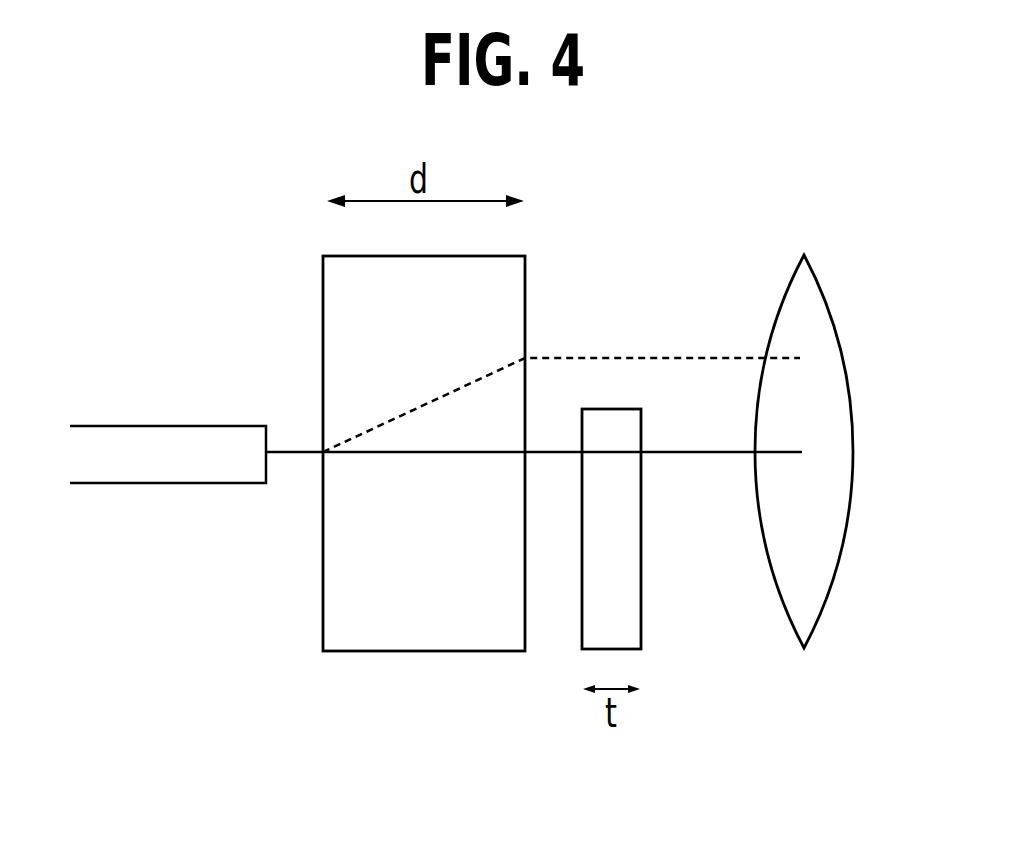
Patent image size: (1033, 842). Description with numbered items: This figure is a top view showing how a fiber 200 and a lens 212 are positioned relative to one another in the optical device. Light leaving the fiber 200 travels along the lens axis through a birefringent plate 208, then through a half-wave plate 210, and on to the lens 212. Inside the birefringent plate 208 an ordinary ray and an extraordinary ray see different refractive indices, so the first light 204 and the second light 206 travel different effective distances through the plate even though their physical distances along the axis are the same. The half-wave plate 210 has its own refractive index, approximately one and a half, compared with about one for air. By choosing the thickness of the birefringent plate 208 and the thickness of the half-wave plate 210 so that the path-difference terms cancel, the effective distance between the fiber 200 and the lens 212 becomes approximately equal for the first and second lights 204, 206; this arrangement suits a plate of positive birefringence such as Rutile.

The fiber 200 is at (137, 423).
The first light 204 is at (603, 357).
The second light 206 is at (553, 455).
The birefringent plate 208 is at (323, 285).
The half-wave plate 210 is at (641, 617).
The lens 212 is at (812, 263).